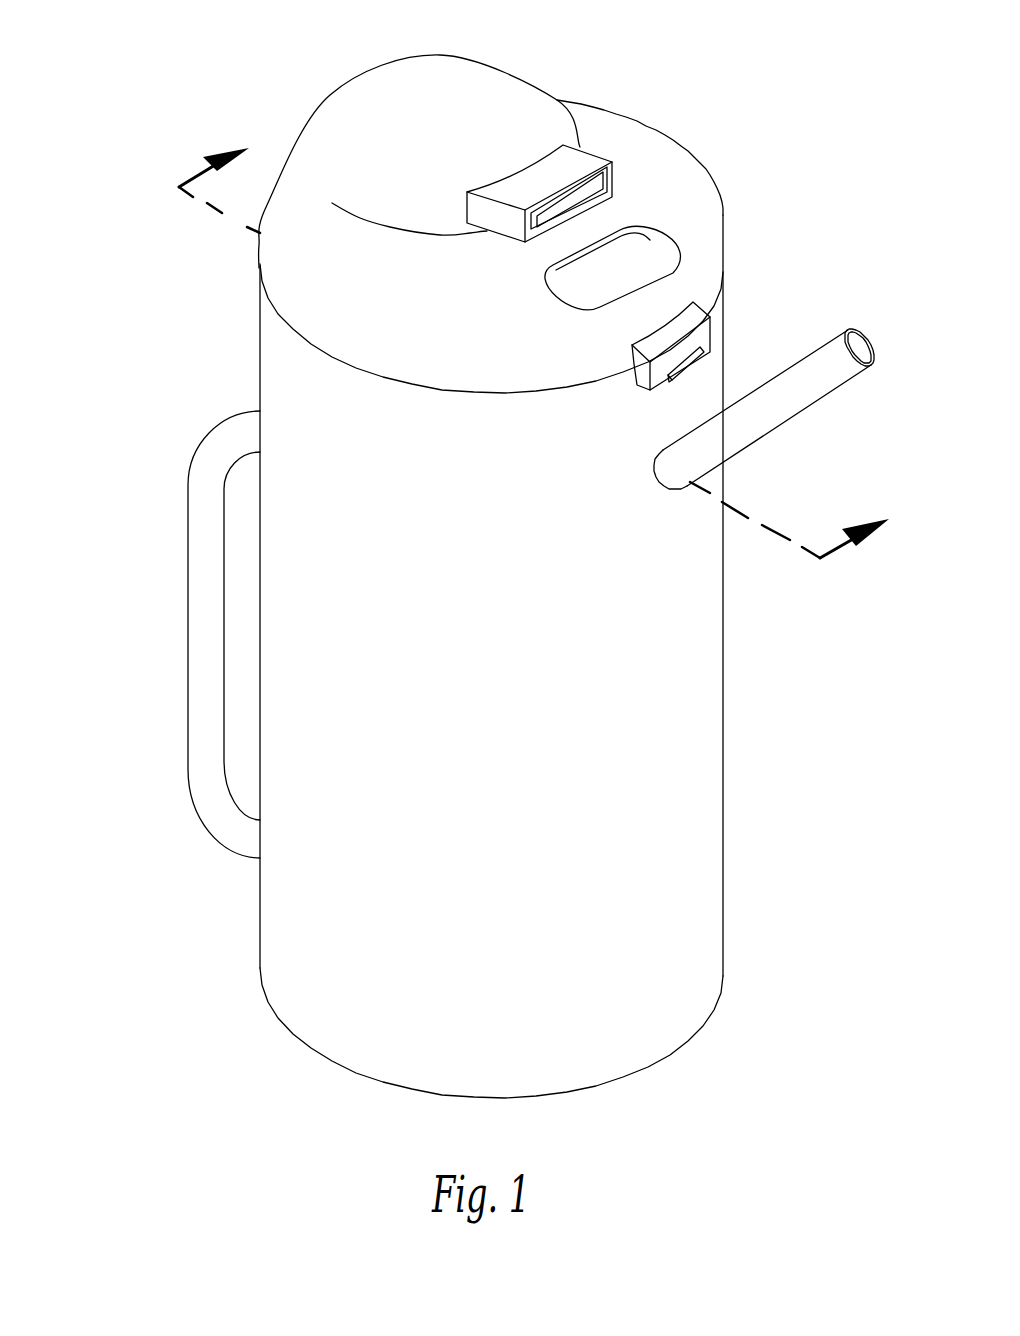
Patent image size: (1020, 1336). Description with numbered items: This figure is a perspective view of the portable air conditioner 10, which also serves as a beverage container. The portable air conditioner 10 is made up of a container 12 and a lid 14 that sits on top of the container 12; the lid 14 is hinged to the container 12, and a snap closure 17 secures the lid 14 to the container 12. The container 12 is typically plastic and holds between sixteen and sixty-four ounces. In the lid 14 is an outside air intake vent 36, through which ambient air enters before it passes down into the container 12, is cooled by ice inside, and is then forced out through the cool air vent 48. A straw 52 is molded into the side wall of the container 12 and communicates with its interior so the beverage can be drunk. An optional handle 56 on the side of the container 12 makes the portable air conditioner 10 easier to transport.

The portable air conditioner 10 is at (132, 80).
The container 12 is at (258, 332).
The lid 14 is at (267, 205).
The snap closure 17 is at (653, 387).
The air intake vent 36 is at (645, 228).
The cool air vent 48 is at (600, 158).
The straw 52 is at (813, 398).
The handle 56 is at (188, 610).